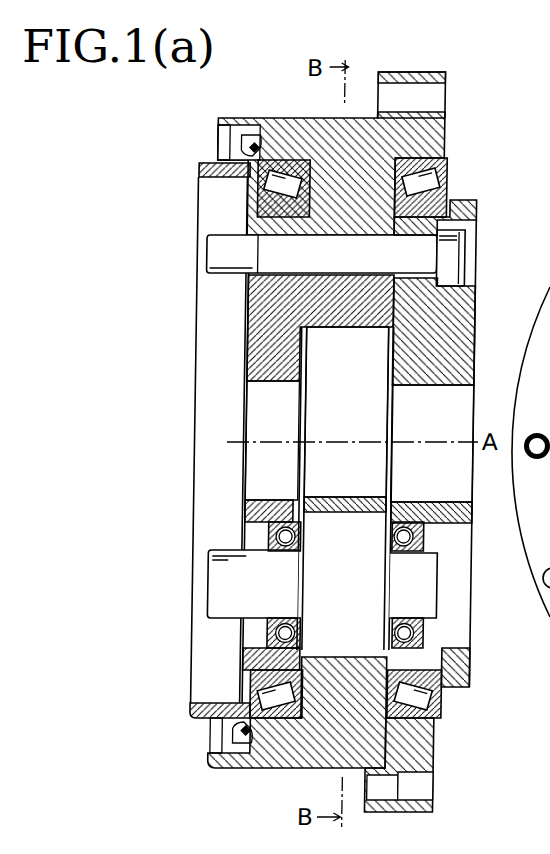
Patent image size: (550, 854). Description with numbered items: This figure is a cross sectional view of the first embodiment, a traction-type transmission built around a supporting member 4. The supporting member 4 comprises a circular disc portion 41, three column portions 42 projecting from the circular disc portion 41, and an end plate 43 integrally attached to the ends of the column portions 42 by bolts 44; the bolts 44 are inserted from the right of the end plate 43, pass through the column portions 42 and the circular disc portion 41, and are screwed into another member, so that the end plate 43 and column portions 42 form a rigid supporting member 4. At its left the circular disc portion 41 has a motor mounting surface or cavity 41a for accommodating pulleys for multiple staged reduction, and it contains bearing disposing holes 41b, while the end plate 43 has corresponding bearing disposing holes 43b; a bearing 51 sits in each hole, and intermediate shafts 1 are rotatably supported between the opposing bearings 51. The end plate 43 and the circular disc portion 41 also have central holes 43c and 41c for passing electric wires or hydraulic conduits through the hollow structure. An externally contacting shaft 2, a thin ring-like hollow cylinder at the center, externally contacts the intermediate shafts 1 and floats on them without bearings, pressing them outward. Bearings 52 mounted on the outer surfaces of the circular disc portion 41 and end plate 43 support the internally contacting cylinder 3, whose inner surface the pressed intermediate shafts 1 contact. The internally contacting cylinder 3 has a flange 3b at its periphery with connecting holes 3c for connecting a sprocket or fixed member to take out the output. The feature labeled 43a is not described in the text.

The intermediate shaft 1 is at (429, 593).
The externally contacting shaft 2 is at (360, 500).
The internally contacting cylinder 3 is at (292, 762).
The flange 3b is at (418, 753).
The connecting holes 3c is at (420, 792).
The supporting member 4 is at (206, 317).
The circular disc portion 41 is at (204, 157).
The cavity 41a is at (221, 182).
The bearing disposing holes 41b is at (244, 527).
The central hole 41c is at (256, 392).
The column portions 42 is at (340, 310).
The end plate 43 is at (474, 215).
The end member flange 43a is at (474, 278).
The bearing disposing holes 43b is at (444, 527).
The central hole 43c is at (412, 392).
The bolts 44 is at (445, 253).
The bearings 51 is at (270, 632).
The bearings 52 is at (274, 165).